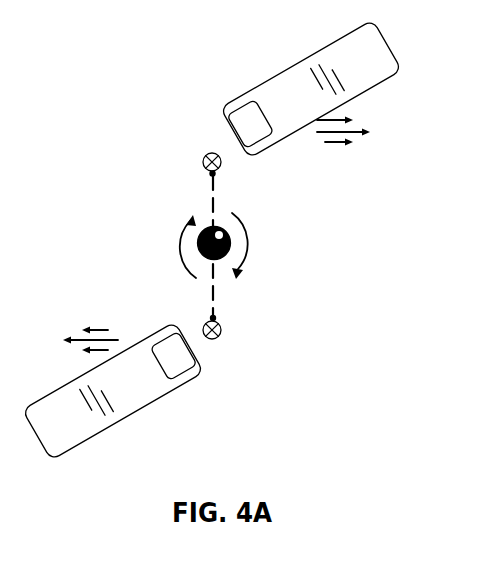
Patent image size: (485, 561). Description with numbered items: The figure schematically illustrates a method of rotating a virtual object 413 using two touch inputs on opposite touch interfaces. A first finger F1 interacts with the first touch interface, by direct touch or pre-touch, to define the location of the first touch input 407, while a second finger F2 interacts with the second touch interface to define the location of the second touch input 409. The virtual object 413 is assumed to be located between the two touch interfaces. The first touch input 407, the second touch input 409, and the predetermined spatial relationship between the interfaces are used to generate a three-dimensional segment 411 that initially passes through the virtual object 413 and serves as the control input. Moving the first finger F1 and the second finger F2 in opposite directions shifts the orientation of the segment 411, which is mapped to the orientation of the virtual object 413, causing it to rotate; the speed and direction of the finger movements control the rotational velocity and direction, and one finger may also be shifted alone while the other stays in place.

The location of the first touch input 407 is at (202, 162).
The location of the second touch input 409 is at (222, 330).
The three-dimensional segment 411 is at (212, 192).
The virtual object 413 is at (196, 245).
The first finger F1 is at (337, 35).
The second finger F2 is at (127, 423).